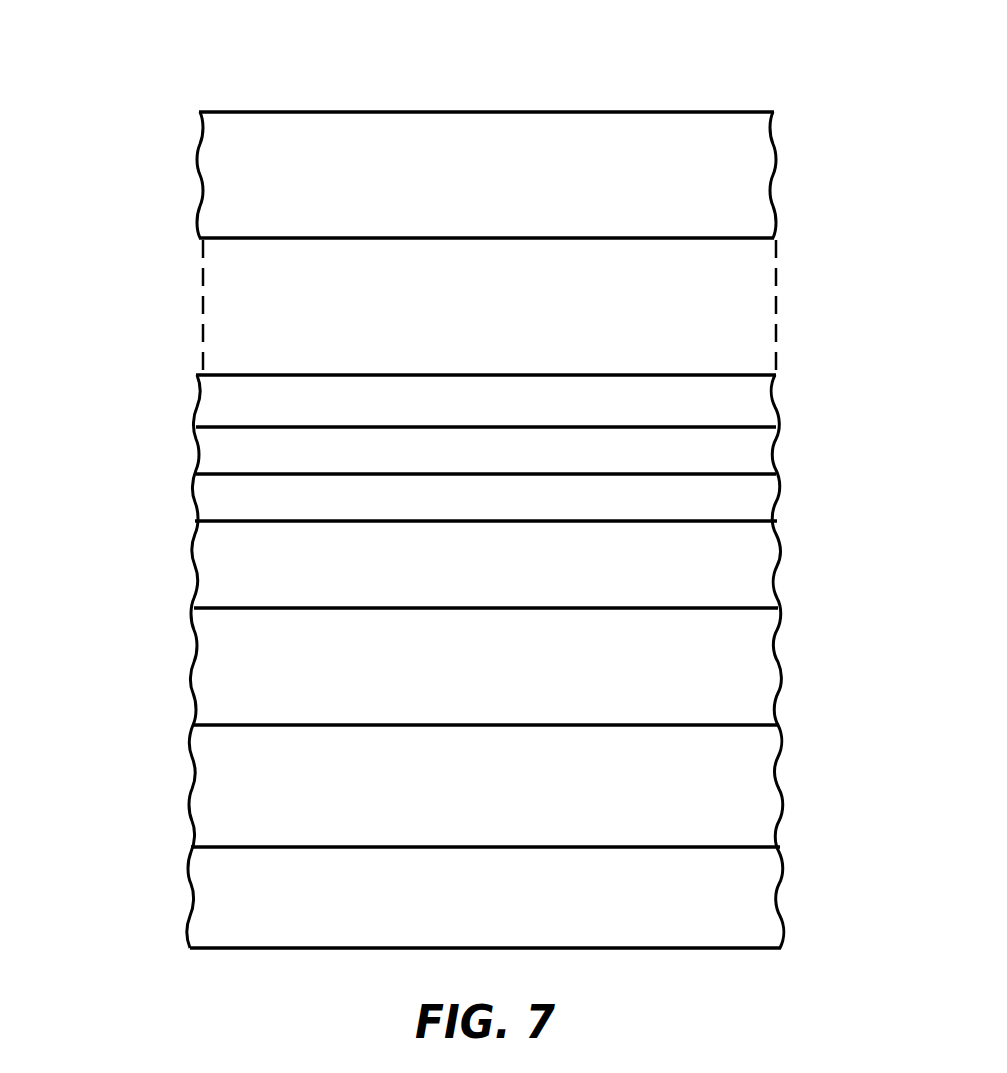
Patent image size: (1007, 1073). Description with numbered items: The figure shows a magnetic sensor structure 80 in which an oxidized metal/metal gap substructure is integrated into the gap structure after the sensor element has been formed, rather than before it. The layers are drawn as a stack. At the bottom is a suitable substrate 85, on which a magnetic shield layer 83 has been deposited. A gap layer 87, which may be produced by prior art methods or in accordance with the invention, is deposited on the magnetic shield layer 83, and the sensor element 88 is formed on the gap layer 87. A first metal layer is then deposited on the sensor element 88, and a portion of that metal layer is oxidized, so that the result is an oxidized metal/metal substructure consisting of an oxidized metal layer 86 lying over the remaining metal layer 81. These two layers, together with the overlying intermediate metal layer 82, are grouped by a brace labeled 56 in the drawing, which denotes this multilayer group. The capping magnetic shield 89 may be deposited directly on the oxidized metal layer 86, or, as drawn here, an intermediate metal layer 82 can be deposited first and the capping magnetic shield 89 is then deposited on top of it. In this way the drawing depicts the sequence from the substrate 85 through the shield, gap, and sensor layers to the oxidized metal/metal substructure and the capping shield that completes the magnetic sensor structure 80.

The magnetic sensor structure 80 is at (114, 106).
The capping magnetic shield 89 is at (776, 185).
The intermediate metal layer 82 is at (776, 396).
The oxidized metal layer 86 is at (776, 448).
The metal layer 81 is at (780, 493).
The metal/metal oxide stack (lead structure) 56 is at (177, 522).
The sensor element 88 is at (785, 568).
The gap layer 87 is at (782, 670).
The magnetic shield layer 83 is at (782, 783).
The substrate 85 is at (782, 903).